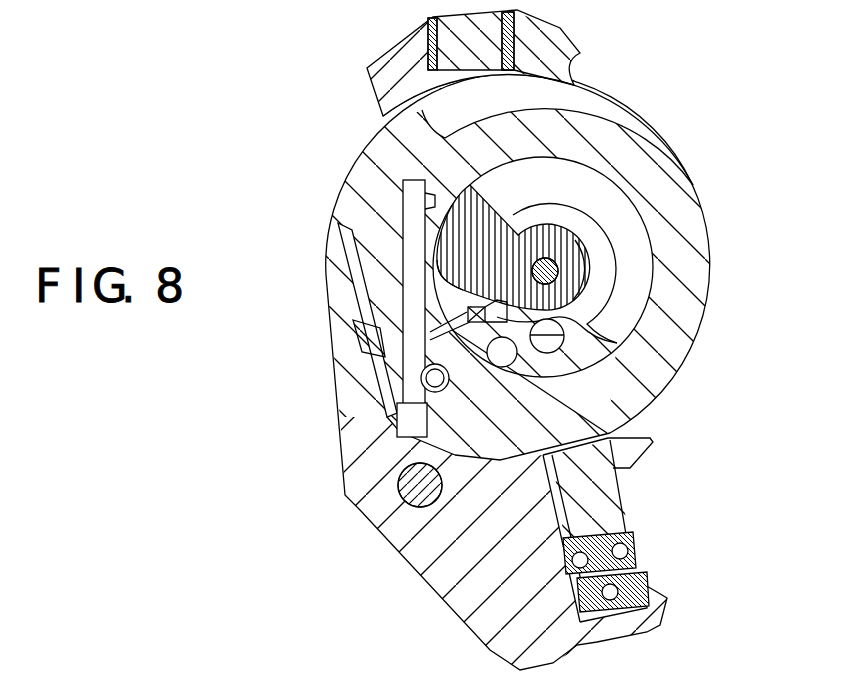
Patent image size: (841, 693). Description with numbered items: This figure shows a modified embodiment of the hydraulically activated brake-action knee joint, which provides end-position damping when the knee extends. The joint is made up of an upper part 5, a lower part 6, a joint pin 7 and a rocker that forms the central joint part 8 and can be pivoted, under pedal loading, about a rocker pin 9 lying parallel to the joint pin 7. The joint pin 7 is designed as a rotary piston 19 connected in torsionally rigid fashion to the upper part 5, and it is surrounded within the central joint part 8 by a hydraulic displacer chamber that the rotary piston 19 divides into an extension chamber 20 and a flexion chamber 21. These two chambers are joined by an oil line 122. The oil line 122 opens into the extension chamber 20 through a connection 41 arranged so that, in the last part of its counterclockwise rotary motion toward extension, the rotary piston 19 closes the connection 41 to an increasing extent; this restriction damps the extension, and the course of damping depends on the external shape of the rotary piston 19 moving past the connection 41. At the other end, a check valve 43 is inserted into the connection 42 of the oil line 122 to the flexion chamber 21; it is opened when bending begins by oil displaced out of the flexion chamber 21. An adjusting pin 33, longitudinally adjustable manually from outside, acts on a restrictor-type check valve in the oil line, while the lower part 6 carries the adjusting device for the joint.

The upper part 5 is at (390, 64).
The lower part 6 is at (473, 580).
The joint pin 7 is at (593, 317).
The central joint part 8 is at (688, 275).
The rocker pin 9 is at (400, 483).
The rotary piston 19 is at (483, 213).
The extension chamber 20 is at (438, 278).
The flexion chamber 21 is at (645, 265).
The adjusting pin 33 is at (380, 411).
The connection 41 is at (400, 185).
The connection 42 is at (428, 377).
The check valve 43 is at (380, 331).
The oil line 122 is at (408, 257).